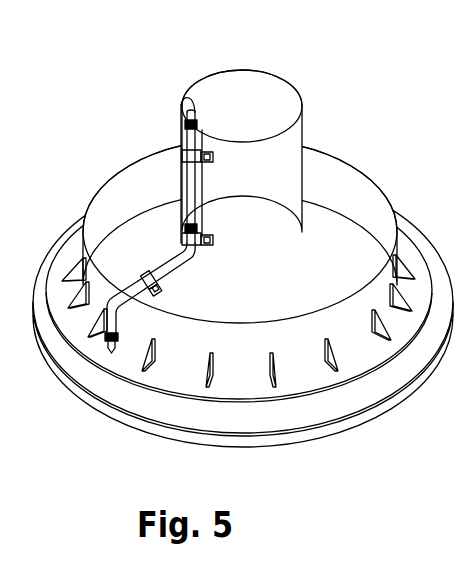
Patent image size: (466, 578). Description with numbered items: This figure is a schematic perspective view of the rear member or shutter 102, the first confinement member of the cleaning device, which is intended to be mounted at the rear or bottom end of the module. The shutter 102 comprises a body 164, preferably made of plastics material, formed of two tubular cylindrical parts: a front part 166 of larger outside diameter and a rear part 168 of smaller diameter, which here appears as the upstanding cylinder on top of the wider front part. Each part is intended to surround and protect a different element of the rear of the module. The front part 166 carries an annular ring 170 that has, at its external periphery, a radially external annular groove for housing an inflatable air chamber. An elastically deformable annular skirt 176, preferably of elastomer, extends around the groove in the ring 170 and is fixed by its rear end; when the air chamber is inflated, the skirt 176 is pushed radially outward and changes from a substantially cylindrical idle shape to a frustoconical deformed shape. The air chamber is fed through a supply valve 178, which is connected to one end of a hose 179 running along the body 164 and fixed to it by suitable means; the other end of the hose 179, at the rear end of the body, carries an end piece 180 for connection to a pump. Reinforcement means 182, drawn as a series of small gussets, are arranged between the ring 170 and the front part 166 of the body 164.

The rear member or shutter 102 is at (340, 69).
The body 164 is at (356, 233).
The front part 166 is at (429, 277).
The rear part 168 is at (278, 168).
The annular ring 170 is at (407, 322).
The elastically deformable annular skirt 176 is at (383, 383).
The supply valve 178 is at (111, 358).
The hose 179 is at (165, 272).
The end piece 180 is at (193, 101).
The reinforcement means 182 is at (326, 353).